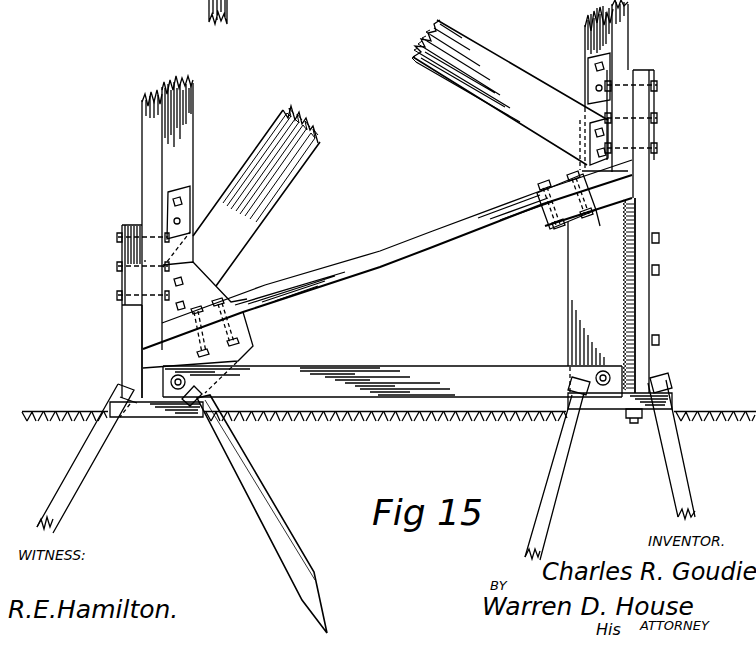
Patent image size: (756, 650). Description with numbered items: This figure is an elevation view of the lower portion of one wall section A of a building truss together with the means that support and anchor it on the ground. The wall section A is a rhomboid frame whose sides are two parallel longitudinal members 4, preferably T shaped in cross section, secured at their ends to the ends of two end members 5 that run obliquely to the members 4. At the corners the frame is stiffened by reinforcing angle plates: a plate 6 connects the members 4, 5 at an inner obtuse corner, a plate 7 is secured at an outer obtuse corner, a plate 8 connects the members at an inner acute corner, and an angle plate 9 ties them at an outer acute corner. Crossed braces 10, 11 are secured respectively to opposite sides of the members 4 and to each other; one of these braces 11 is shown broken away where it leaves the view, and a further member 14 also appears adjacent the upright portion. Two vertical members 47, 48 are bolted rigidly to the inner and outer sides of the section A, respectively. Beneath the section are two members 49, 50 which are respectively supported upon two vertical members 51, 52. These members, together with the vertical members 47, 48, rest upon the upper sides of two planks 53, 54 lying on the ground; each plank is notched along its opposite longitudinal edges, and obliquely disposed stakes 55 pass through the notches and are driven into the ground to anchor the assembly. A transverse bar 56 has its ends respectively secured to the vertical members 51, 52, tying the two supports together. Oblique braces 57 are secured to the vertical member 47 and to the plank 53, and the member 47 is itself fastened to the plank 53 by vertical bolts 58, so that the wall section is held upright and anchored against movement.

The wall section A is at (147, 159).
The longitudinal member 4 is at (183, 137).
The end member 5 is at (405, 250).
The reinforcing angle plate 6 is at (562, 177).
The reinforcing angle plate 7 is at (608, 186).
The reinforcing angle plate 8 is at (217, 290).
The angle plate 9 is at (163, 325).
The crossed brace 10 is at (257, 208).
The crossed brace 11 is at (528, 126).
The post 14 is at (630, 42).
The vertical member 47 is at (650, 208).
The vertical member 48 is at (130, 277).
The member 49 is at (543, 228).
The member 50 is at (250, 321).
The vertical member 51 is at (578, 283).
The vertical member 52 is at (242, 347).
The plank 53 is at (672, 395).
The plank 54 is at (158, 407).
The stake 55 is at (80, 473).
The transverse bar 56 is at (416, 372).
The oblique brace 57 is at (640, 303).
The vertical bolt 58 is at (640, 418).